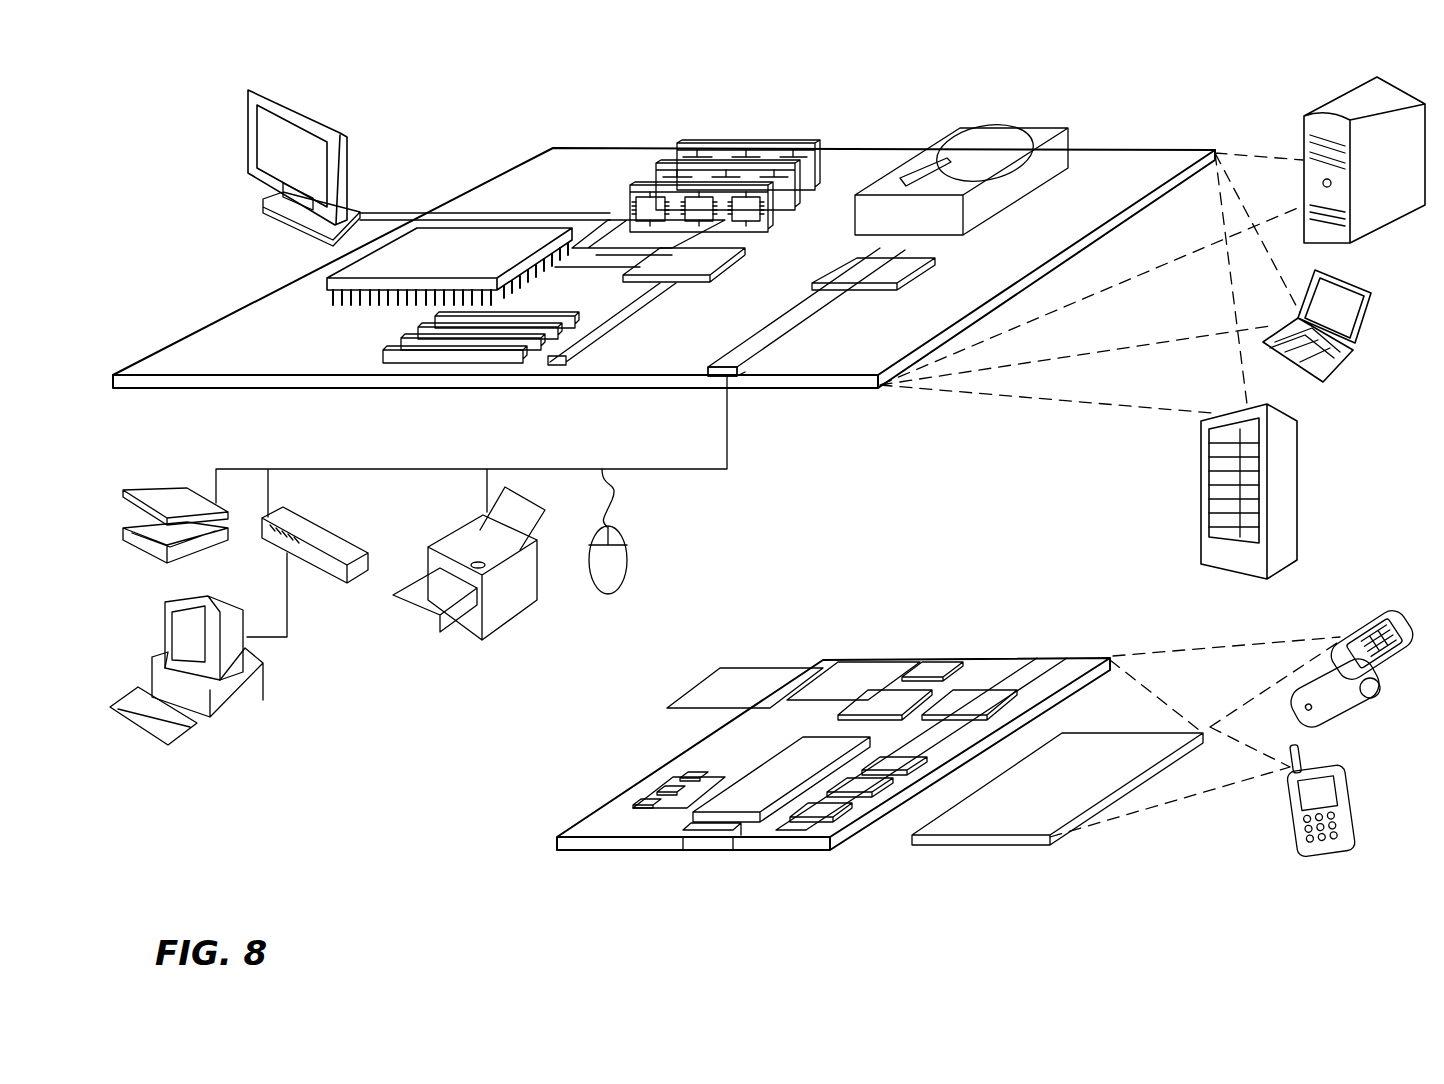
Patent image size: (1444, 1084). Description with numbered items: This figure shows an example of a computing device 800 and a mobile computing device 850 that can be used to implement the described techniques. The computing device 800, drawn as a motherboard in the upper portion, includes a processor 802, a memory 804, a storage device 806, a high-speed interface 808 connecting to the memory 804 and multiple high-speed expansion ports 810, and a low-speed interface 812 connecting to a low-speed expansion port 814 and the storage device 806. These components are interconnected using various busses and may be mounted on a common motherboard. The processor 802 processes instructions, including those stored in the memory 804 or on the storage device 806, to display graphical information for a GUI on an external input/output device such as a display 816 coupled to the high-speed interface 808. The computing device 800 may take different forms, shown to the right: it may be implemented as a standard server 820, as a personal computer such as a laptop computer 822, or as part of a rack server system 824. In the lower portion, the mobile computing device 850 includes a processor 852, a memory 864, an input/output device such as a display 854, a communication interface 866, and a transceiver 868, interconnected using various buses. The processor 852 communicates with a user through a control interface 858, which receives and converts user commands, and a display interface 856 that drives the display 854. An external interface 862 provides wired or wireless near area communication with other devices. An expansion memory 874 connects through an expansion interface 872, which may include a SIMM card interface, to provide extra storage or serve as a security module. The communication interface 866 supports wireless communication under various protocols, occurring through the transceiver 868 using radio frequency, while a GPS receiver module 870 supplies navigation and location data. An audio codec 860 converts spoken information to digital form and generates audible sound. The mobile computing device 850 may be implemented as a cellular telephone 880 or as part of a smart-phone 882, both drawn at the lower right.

The computing device 800 is at (465, 116).
The processor 802 is at (327, 282).
The memory 804 is at (700, 143).
The storage device 806 is at (956, 128).
The high-speed interface 808 is at (660, 262).
The high-speed expansion ports 810 is at (410, 345).
The low-speed interface 812 is at (852, 268).
The low-speed expansion port 814 is at (740, 378).
The display 816 is at (250, 90).
The standard server 820 is at (1304, 135).
The laptop computer 822 is at (1370, 292).
The rack server system 824 is at (1201, 508).
The mobile computing device 850 is at (931, 754).
The processor 852 is at (750, 800).
The display 854 is at (1020, 820).
The display interface 856 is at (830, 815).
The control interface 858 is at (860, 782).
The audio codec 860 is at (893, 763).
The external interface 862 is at (713, 843).
The memory 864 is at (653, 790).
The communication interface 866 is at (885, 695).
The transceiver 868 is at (970, 700).
The GPS receiver module 870 is at (935, 660).
The expansion interface 872 is at (800, 668).
The expansion memory 874 is at (720, 672).
The cellular telephone 880 is at (1355, 618).
The handheld device 882 is at (1292, 800).